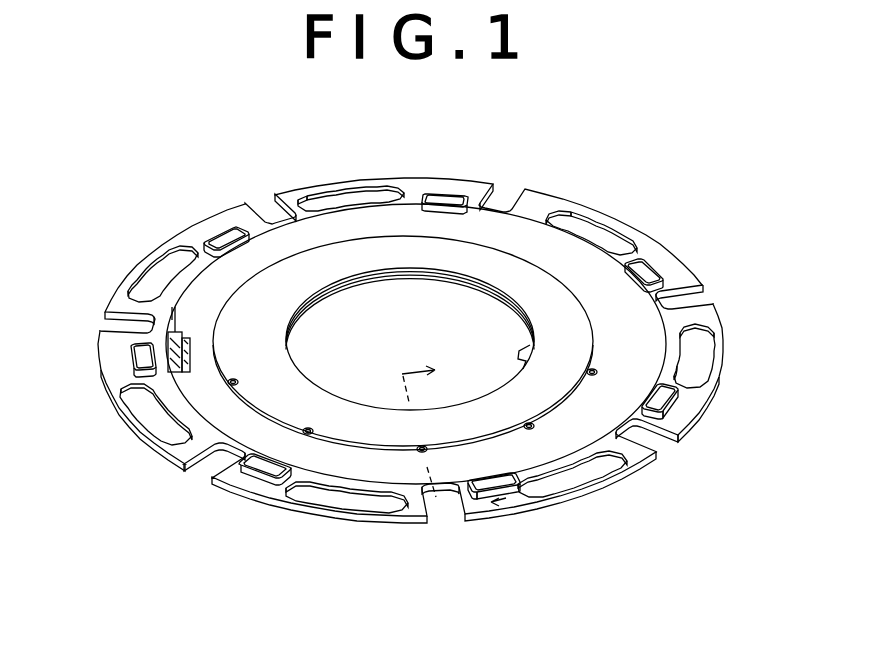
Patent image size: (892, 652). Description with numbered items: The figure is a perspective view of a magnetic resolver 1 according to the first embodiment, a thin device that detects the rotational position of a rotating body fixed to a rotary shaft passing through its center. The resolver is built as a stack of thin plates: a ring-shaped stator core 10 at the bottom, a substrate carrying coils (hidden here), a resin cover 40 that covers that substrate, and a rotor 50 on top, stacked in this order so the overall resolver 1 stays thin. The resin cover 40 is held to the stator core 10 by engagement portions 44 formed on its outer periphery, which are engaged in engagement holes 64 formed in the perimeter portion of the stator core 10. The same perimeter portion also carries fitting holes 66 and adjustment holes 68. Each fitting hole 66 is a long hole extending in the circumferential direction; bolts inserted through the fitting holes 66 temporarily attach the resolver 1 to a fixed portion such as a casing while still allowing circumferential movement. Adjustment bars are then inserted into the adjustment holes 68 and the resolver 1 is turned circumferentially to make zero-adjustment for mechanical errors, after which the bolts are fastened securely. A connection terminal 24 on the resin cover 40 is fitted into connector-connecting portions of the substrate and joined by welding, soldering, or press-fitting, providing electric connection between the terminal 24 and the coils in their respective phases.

The magnetic resolver 1 is at (658, 168).
The stator core 10 is at (536, 189).
The connection terminal 24 is at (170, 330).
The resin cover 40 is at (624, 320).
The engagement portion 44 is at (655, 437).
The rotor 50 is at (541, 292).
The engagement hole 64 is at (681, 405).
The fitting hole 66 is at (695, 352).
The adjustment hole 68 is at (688, 297).